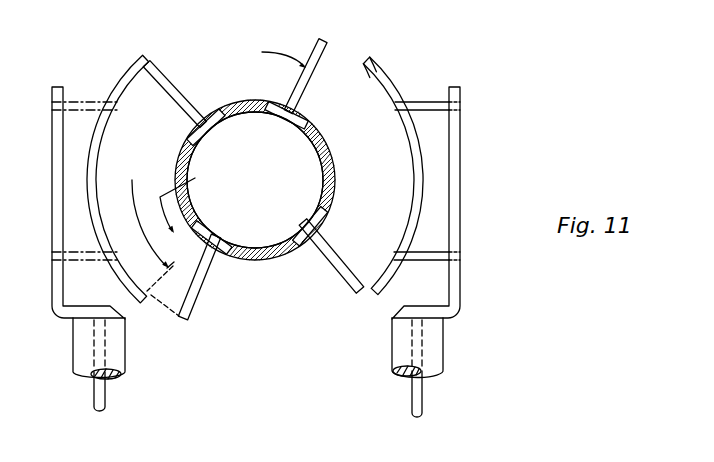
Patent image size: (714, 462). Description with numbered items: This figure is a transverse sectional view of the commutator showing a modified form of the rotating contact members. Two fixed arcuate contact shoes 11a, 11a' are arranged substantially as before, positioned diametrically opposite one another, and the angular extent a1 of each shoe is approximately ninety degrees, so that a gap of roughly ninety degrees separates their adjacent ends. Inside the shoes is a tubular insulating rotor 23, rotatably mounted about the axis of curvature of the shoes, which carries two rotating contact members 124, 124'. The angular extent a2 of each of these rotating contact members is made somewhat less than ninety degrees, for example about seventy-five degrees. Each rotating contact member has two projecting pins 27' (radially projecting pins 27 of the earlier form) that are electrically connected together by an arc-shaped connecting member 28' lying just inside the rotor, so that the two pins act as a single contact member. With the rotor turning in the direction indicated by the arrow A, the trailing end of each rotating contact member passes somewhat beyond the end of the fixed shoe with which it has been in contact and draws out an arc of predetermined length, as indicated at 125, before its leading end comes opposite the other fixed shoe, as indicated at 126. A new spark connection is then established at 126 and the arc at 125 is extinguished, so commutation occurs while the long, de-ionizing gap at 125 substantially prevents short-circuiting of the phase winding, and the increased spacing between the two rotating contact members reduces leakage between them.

The fixed arcuate contact shoe 11a is at (118, 176).
The fixed arcuate contact shoe 11a' is at (397, 175).
The arc gap 125 is at (366, 62).
The insulating rotor 23 is at (337, 162).
The connecting member 28' is at (255, 180).
The projecting pin 27' is at (248, 113).
The radially projecting pin 27 is at (259, 244).
The spark connection position 126 is at (147, 64).
The rotating contact member 124' is at (270, 64).
The rotating contact member 124 is at (270, 269).
The angular extent of rotating contact member a2 is at (275, 56).
The angular extent of fixed contact shoe a1 is at (153, 240).
The direction of rotation A is at (183, 203).